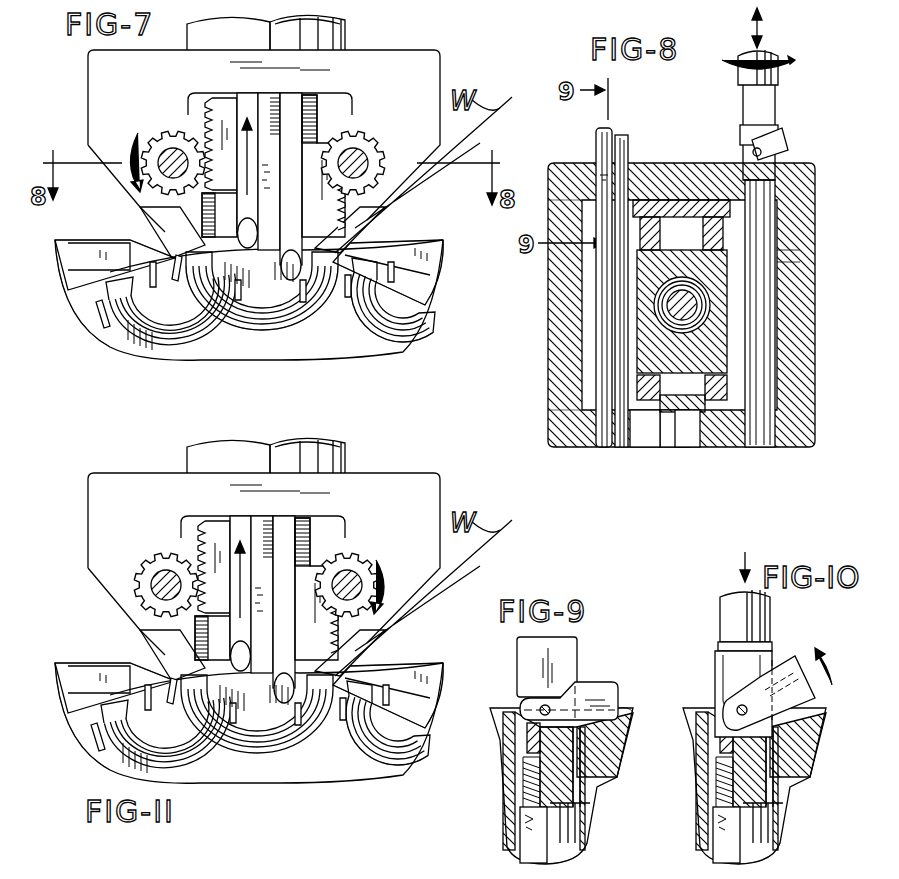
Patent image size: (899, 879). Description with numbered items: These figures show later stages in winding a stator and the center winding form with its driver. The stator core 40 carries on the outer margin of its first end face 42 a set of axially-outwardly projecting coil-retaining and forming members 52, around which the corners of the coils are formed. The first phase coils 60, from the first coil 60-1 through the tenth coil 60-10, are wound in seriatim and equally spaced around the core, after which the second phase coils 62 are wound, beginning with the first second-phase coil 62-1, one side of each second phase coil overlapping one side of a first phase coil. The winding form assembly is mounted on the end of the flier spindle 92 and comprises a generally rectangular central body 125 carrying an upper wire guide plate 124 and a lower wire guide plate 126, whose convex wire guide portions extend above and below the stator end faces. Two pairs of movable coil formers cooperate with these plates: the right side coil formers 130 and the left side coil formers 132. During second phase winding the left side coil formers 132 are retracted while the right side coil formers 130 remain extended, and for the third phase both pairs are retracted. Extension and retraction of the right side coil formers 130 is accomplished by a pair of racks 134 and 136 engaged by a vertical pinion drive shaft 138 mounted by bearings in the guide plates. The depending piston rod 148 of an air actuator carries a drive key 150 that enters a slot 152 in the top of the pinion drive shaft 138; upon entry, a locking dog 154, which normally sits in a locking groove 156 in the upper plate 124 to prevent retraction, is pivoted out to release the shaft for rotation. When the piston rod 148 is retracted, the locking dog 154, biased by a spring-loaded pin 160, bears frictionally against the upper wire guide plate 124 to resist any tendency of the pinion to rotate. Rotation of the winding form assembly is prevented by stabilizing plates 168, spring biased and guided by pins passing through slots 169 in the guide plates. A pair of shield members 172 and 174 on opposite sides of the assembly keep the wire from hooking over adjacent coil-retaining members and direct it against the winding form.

In FIG. 7, the stator core 40 is at (110, 348).
In FIG. 11, the stator core 40 is at (83, 764).
In FIG. 7, the first end face 42 is at (422, 290).
In FIG. 11, the first end face 42 is at (375, 672).
In FIG. 7, the coil-retaining and forming members 52 is at (430, 224).
In FIG. 11, the coil-retaining and forming members 52 is at (140, 656).
In FIG. 11, the first phase coils 60 is at (340, 780).
In FIG. 7, the first coil of the first phase 60-1 is at (376, 335).
In FIG. 7, the tenth coil of the first phase 60-10 is at (143, 350).
In FIG. 11, the second phase coils 62 is at (212, 775).
In FIG. 7, the first coil of the second phase 62-1 is at (278, 362).
In FIG. 7, the flier spindle 92 is at (346, 38).
In FIG. 11, the flier spindle 92 is at (346, 461).
In FIG. 8, the upper wire guide plate 124 is at (565, 165).
In FIG. 8, the central body 125 is at (552, 310).
In FIG. 8, the lower wire guide plate 126 is at (560, 432).
In FIG. 7, the right side coil formers 130 is at (293, 312).
In FIG. 8, the right side coil formers 130 is at (660, 245).
In FIG. 11, the right side coil formers 130 is at (287, 525).
In FIG. 7, the left side coil formers 132 is at (247, 320).
In FIG. 8, the left side coil formers 132 is at (770, 258).
In FIG. 11, the left side coil formers 132 is at (240, 527).
In FIG. 8, the rack 134 is at (648, 215).
In FIG. 7, the rack 136 is at (232, 82).
In FIG. 8, the rack 136 is at (638, 386).
In FIG. 11, the rack 136 is at (212, 530).
In FIG. 7, the pinion drive shaft 138 is at (163, 130).
In FIG. 8, the pinion drive shaft 138 is at (596, 338).
In FIG. 9, the pinion drive shaft 138 is at (585, 848).
In FIG. 10, the pinion drive shaft 138 is at (780, 835).
In FIG. 11, the pinion drive shaft 138 is at (165, 556).
In FIG. 8, the piston rod 148 is at (770, 100).
In FIG. 10, the piston rod 148 is at (730, 598).
In FIG. 8, the drive key 150 is at (778, 135).
In FIG. 10, the drive key 150 is at (728, 645).
In FIG. 9, the slot 152 is at (516, 655).
In FIG. 10, the slot 152 is at (716, 660).
In FIG. 8, the locking dog 154 is at (788, 148).
In FIG. 9, the locking dog 154 is at (600, 680).
In FIG. 10, the locking dog 154 is at (793, 657).
In FIG. 9, the locking groove 156 is at (625, 712).
In FIG. 10, the locking groove 156 is at (818, 702).
In FIG. 9, the spring-loaded pin 160 is at (538, 738).
In FIG. 10, the spring-loaded pin 160 is at (735, 760).
In FIG. 8, the stabilizing plates 168 is at (680, 200).
In FIG. 8, the slots 169 is at (690, 432).
In FIG. 7, the shield member 172 is at (432, 250).
In FIG. 11, the shield member 172 is at (432, 680).
In FIG. 7, the shield member 174 is at (72, 285).
In FIG. 11, the shield member 174 is at (68, 700).